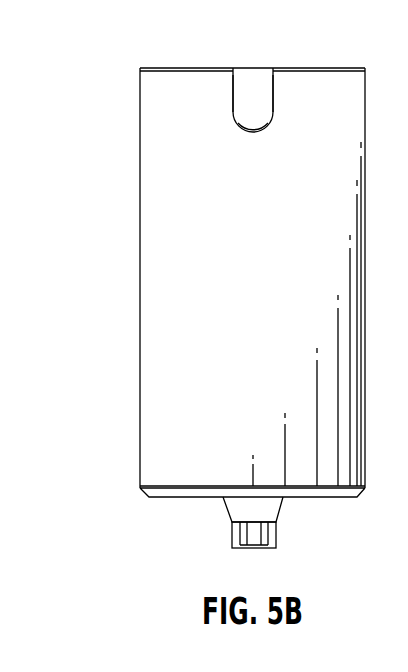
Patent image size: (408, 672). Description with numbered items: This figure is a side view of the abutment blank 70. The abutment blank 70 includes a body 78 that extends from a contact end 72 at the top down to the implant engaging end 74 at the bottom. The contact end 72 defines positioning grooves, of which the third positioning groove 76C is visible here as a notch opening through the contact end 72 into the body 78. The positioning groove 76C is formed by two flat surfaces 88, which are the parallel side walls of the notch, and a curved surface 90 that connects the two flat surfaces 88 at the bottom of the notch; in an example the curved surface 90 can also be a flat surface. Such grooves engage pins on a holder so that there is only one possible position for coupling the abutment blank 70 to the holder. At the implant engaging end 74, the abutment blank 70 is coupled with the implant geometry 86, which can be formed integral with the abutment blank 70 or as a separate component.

The abutment blank 70 is at (96, 49).
The contact end 72 is at (190, 68).
The implant engaging end 74 is at (313, 497).
The third positioning groove 76C is at (247, 95).
The body 78 is at (140, 280).
The implant geometry 86 is at (232, 533).
The flat surfaces 88 is at (233, 98).
The curved surface 90 is at (252, 133).